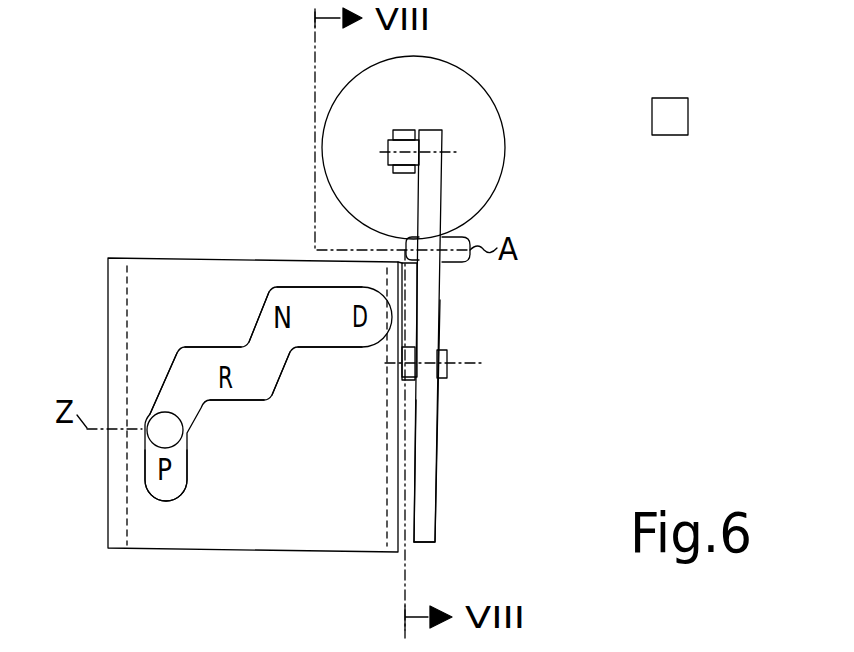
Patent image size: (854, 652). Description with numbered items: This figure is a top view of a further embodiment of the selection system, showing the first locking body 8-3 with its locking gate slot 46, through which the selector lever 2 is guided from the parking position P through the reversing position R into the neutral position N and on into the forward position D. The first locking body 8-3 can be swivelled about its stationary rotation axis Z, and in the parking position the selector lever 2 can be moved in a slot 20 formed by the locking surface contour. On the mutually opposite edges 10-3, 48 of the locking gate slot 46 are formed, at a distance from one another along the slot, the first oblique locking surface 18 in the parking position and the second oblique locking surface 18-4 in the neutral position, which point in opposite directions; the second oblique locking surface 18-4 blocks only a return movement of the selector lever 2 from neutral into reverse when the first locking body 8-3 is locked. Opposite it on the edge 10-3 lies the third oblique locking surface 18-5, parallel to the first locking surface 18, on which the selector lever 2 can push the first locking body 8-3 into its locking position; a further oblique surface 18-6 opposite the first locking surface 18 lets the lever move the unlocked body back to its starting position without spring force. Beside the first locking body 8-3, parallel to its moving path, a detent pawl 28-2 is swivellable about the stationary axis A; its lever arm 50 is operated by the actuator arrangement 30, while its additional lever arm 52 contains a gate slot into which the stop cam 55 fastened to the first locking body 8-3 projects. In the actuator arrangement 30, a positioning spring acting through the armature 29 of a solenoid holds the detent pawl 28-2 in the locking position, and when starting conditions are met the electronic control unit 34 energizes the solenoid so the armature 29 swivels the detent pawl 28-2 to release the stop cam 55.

The selector lever 2 is at (155, 417).
The first locking body 8-3 is at (140, 543).
The gate slot edge 10-3 is at (253, 403).
The first oblique locking surface 18 is at (198, 414).
The second oblique locking surface 18-4 is at (258, 313).
The third oblique locking surface 18-5 is at (281, 374).
The gate section 18-6 is at (175, 352).
The slot 20 is at (145, 479).
The detent pawl 28-2 is at (423, 500).
The armature 29 is at (398, 138).
The actuator arrangement 30 is at (472, 117).
The electronic control unit 34 is at (688, 120).
The locking gate slot 46 is at (322, 310).
The gate slot edge 48 is at (202, 347).
The lever arm 50 is at (433, 198).
The additional lever arm 52 is at (433, 465).
The stop cam 55 is at (443, 371).